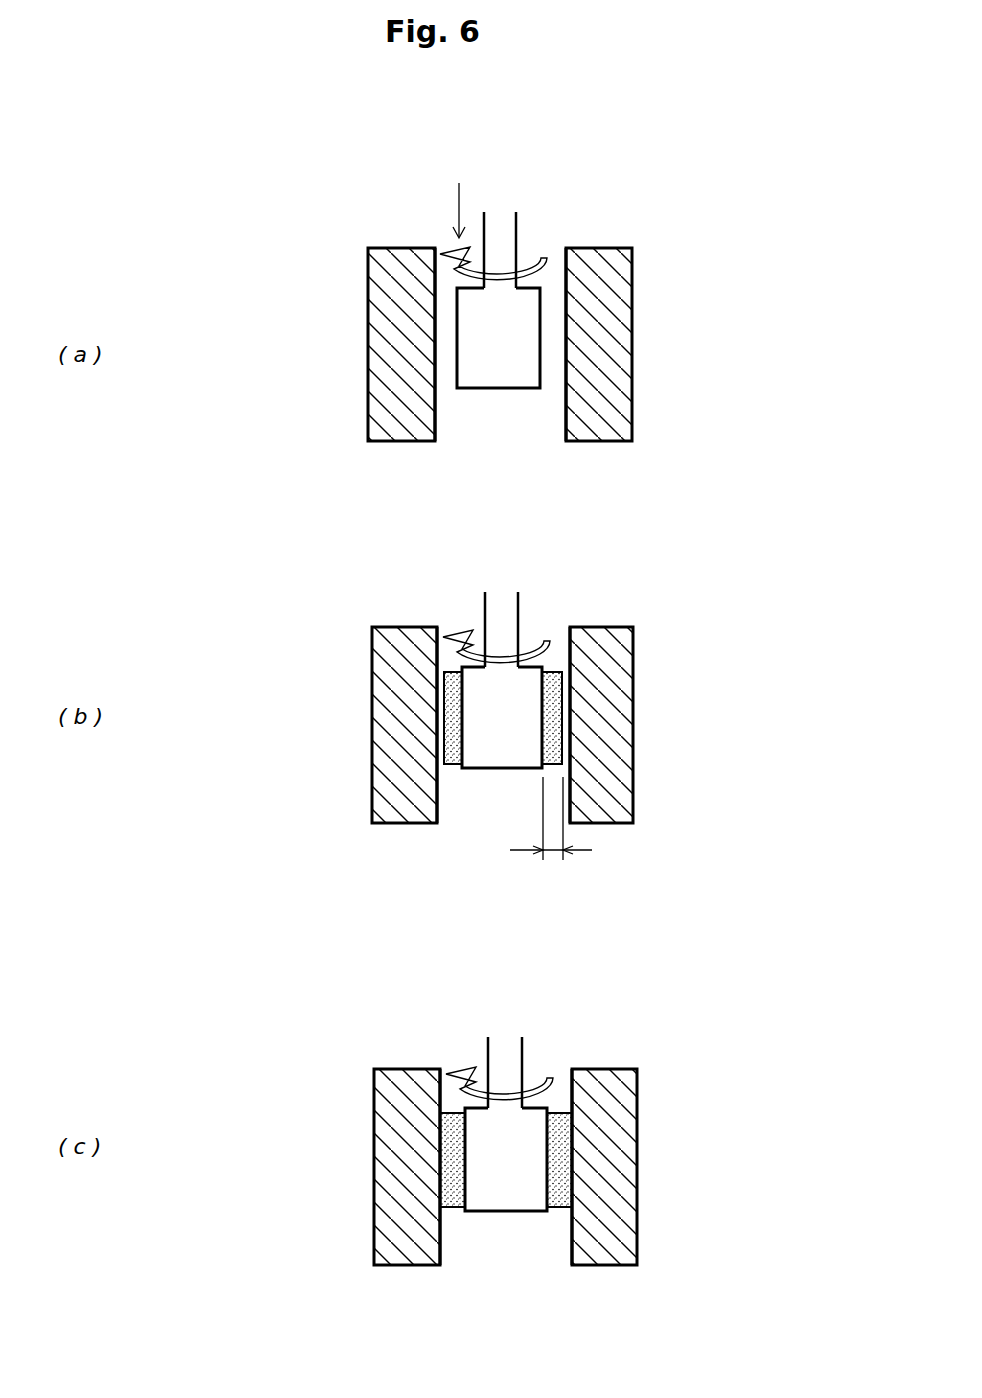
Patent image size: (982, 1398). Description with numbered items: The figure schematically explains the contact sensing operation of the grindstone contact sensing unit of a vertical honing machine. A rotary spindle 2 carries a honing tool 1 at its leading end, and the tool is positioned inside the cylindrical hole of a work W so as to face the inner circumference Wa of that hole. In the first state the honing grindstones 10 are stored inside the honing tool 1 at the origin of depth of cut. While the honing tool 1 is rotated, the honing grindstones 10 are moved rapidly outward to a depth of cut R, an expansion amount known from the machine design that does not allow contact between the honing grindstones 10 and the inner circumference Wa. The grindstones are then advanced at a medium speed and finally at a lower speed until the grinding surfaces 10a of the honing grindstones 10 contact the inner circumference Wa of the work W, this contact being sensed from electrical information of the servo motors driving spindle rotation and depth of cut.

The honing tool 1 is at (492, 392).
The rotary spindle 2 is at (517, 240).
The work W is at (618, 247).
The inner circumference of the cylindrical hole of the work Wa is at (560, 265).
The honing grindstone 10 is at (555, 665).
The grinding surface 10a is at (444, 718).
The depth of cut in rapid expansion process R is at (548, 852).